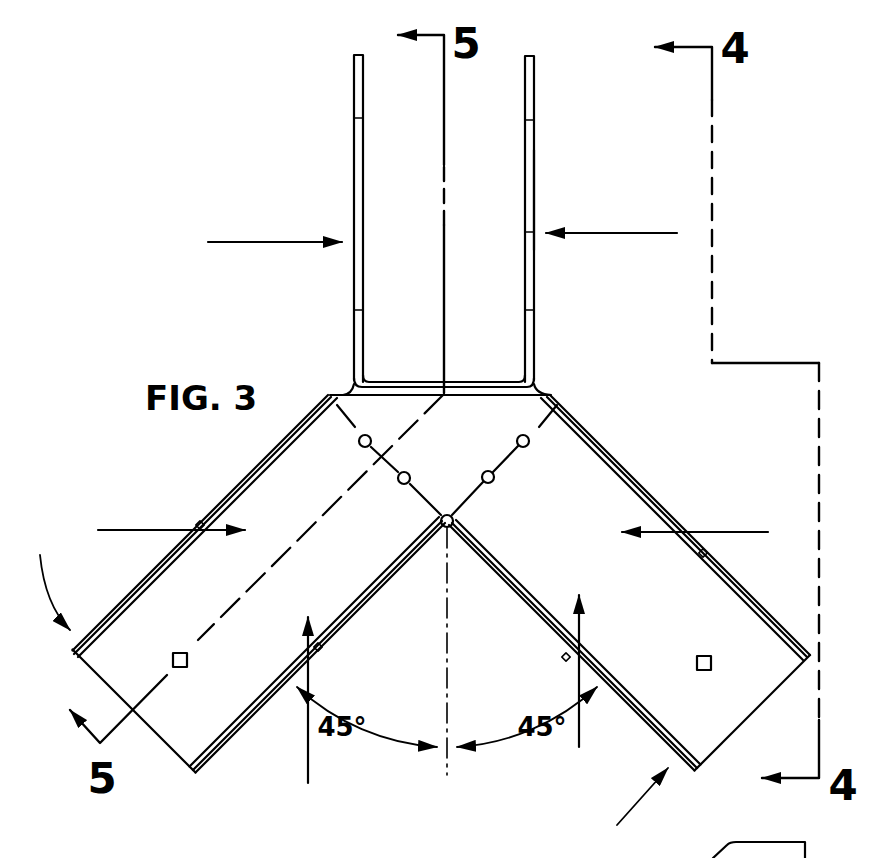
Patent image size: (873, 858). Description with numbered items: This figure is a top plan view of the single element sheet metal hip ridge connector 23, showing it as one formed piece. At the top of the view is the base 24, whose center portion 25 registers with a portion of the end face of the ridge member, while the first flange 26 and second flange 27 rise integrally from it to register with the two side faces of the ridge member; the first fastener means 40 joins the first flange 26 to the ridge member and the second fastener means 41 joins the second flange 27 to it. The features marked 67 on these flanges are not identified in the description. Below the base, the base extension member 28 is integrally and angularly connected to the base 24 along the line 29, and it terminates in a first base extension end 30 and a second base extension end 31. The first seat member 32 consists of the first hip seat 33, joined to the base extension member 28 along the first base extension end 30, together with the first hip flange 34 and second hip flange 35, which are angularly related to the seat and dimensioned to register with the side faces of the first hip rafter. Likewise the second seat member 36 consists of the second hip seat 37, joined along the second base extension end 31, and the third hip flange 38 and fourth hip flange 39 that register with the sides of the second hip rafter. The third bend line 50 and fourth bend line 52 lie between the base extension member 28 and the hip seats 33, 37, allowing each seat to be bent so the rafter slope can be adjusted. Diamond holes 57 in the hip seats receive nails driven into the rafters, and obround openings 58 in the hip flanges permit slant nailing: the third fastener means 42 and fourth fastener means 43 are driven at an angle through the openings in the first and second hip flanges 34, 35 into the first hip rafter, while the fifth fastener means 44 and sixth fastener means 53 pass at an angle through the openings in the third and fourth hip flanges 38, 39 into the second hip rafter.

The single element sheet metal hip ridge connector 23 is at (489, 221).
The base 24 is at (542, 283).
The center portion 25 is at (410, 383).
The first flange 26 is at (354, 141).
The second flange 27 is at (534, 202).
The base extension member 28 is at (391, 579).
The line 29 is at (461, 395).
The first base extension end 30 is at (337, 405).
The second base extension end 31 is at (557, 405).
The first seat member 32 is at (44, 575).
The first hip seat 33 is at (198, 584).
The first hip flange 34 is at (113, 612).
The second hip flange 35 is at (222, 752).
The second seat member 36 is at (621, 811).
The second hip seat 37 is at (678, 583).
The third hip flange 38 is at (650, 740).
The fourth hip flange 39 is at (775, 615).
The first fastener means 40 is at (290, 241).
The second fastener means 41 is at (598, 232).
The third fastener means 42 is at (146, 530).
The fourth fastener means 43 is at (310, 688).
The fifth fastener means 44 is at (580, 625).
The third bend line 50 is at (414, 500).
The fourth bend line 52 is at (460, 503).
The sixth fastener means 53 is at (734, 532).
The diamond holes 57 is at (188, 661).
The obround openings 58 is at (196, 522).
The wall break lines 67 is at (365, 243).